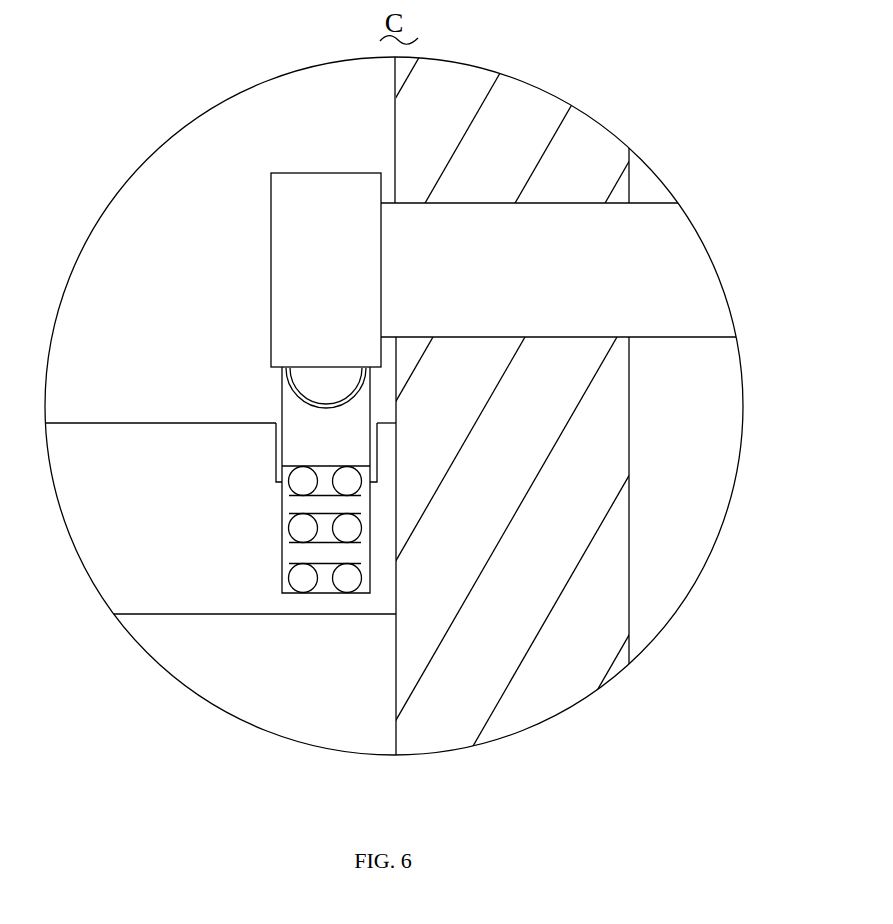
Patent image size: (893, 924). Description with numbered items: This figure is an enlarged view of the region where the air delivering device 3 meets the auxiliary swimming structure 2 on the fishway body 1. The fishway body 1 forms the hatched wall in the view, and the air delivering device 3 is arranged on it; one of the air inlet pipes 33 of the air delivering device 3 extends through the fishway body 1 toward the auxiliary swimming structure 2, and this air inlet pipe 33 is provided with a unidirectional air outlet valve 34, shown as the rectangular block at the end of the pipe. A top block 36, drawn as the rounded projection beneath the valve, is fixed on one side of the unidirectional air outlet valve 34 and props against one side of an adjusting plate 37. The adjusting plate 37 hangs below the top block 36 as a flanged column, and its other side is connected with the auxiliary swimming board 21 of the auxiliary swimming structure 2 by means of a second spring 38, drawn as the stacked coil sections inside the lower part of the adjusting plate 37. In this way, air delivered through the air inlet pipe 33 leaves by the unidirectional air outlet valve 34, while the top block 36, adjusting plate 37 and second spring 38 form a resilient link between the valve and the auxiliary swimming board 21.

The fishway body 1 is at (477, 612).
The auxiliary swimming structure 2 is at (110, 527).
The auxiliary swimming board 21 is at (241, 578).
The air delivering device 3 is at (290, 399).
The air inlet pipe 33 is at (648, 273).
The unidirectional air outlet valve 34 is at (305, 307).
The top block 36 is at (320, 383).
The adjusting plate 37 is at (315, 437).
The second spring 38 is at (345, 578).